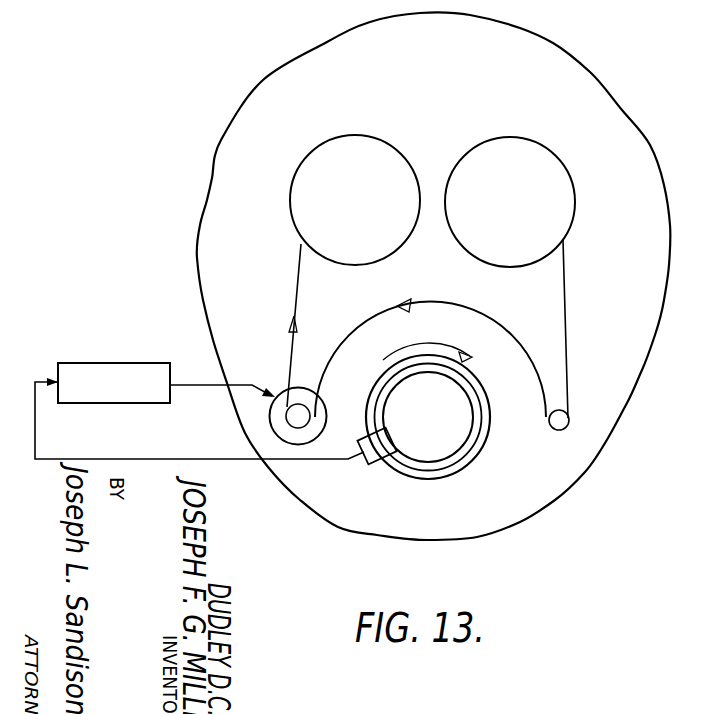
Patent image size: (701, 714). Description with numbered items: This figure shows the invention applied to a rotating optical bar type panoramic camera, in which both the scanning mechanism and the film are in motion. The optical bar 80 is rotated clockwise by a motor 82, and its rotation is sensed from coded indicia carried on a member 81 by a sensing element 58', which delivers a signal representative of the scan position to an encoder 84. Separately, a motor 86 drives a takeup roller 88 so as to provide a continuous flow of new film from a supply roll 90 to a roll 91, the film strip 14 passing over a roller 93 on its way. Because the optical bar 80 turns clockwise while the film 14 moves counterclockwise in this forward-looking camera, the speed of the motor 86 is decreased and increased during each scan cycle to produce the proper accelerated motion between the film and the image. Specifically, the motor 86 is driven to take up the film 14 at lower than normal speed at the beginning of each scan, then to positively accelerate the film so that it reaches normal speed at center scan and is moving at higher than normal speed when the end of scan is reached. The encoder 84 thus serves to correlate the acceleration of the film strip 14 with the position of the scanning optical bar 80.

The film strip 14 is at (463, 310).
The sensing element 58' is at (375, 470).
The optical bar 80 is at (448, 467).
The member 81 is at (444, 421).
The motor 82 is at (483, 392).
The encoder 84 is at (113, 363).
The motor 86 is at (283, 395).
The takeup roller 88 is at (298, 418).
The supply roll 90 is at (525, 143).
The roll 91 is at (377, 143).
The roller 93 is at (560, 431).